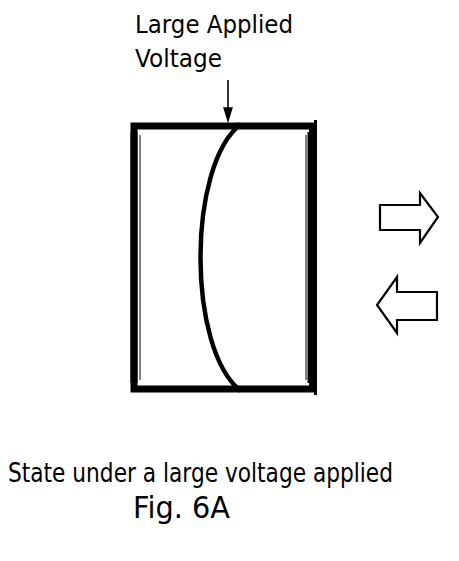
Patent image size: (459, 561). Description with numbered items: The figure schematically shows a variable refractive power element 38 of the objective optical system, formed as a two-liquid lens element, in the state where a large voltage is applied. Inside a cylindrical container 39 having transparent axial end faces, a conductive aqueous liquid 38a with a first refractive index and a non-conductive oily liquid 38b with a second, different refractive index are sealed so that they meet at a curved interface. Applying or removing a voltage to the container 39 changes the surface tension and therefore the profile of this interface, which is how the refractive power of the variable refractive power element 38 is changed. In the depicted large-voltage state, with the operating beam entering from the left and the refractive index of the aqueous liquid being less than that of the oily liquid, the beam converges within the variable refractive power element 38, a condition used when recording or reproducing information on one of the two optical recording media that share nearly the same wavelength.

The variable refractive power element 38 is at (309, 74).
The conductive aqueous liquid 38a is at (184, 141).
The non-conductive oily liquid 38b is at (284, 141).
The cylindrical container 39 is at (317, 151).